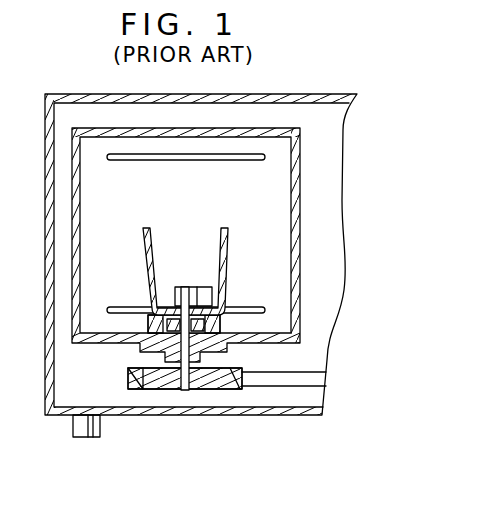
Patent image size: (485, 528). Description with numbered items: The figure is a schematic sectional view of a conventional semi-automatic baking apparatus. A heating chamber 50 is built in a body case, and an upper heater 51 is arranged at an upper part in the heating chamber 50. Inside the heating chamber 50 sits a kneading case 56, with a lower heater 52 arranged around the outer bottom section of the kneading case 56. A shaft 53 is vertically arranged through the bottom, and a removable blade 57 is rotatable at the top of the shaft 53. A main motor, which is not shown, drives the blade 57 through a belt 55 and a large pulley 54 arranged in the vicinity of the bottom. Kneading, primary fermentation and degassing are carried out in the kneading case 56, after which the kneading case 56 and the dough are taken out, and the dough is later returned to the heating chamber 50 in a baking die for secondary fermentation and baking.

The heating chamber 50 is at (272, 212).
The upper heater 51 is at (264, 161).
The lower heater 52 is at (108, 306).
The shaft 53 is at (184, 390).
The pulley 54 is at (234, 390).
The belt 55 is at (300, 386).
The kneading case 56 is at (145, 248).
The removable blade 57 is at (200, 287).